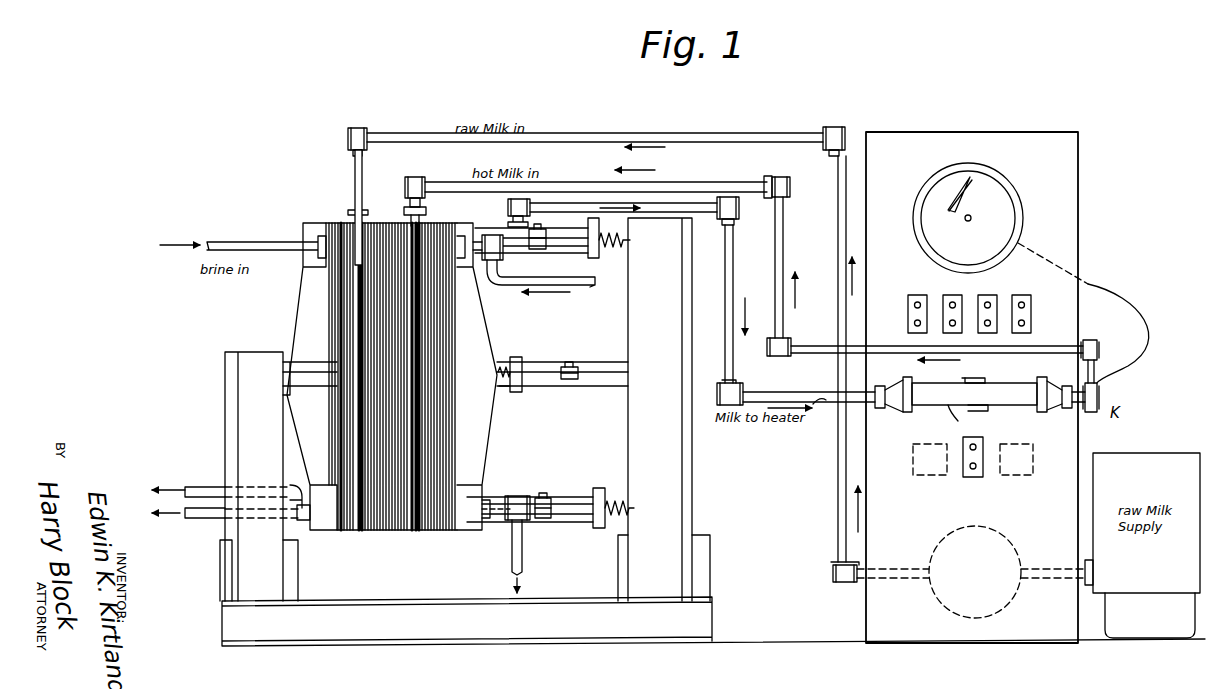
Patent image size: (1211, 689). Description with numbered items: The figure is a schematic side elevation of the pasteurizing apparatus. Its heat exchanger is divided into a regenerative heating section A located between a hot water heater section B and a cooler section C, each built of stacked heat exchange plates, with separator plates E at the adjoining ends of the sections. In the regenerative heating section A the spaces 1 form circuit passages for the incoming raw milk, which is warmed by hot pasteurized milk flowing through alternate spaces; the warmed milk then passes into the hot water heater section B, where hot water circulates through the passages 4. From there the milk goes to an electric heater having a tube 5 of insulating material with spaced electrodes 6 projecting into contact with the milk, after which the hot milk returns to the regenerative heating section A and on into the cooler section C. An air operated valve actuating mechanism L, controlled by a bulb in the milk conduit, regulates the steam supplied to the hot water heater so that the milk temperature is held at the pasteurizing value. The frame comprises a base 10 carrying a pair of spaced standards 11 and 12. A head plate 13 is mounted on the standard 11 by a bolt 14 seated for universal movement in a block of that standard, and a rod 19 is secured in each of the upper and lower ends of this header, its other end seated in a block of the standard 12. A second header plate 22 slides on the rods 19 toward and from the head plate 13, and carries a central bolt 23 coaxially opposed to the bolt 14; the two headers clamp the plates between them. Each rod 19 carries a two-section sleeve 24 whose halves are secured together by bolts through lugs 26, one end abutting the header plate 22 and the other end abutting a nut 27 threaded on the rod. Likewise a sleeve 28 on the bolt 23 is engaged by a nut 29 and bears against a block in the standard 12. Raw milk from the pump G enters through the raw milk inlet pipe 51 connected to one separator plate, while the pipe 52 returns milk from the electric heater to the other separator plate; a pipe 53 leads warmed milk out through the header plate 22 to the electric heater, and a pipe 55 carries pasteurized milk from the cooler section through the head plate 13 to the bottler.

The spaces 1 is at (1018, 400).
The passages 4 is at (982, 375).
The tube 5 is at (1010, 382).
The electrodes 6 is at (962, 380).
The base 10 is at (448, 632).
The standard 11 is at (240, 425).
The standard 12 is at (672, 505).
The head plate 13 is at (301, 307).
The bolt 14 is at (297, 352).
The rod 19 is at (614, 498).
The second header plate 22 is at (481, 352).
The bolt 23 is at (503, 392).
The sleeve 24 is at (567, 496).
The lugs 26 is at (579, 369).
The nut 27 is at (600, 488).
The sleeve 28 is at (609, 383).
The nut 29 is at (518, 392).
The raw milk inlet pipe 51 is at (840, 491).
The pipe 52 is at (712, 193).
The pipe 53 is at (738, 314).
The pipe 55 is at (220, 487).
The regenerative heating section A is at (388, 535).
The hot water heater section B is at (433, 535).
The cooler section C is at (350, 535).
The separator plates E is at (404, 566).
The pump G is at (975, 618).
The air operated valve actuating mechanism L is at (1018, 224).